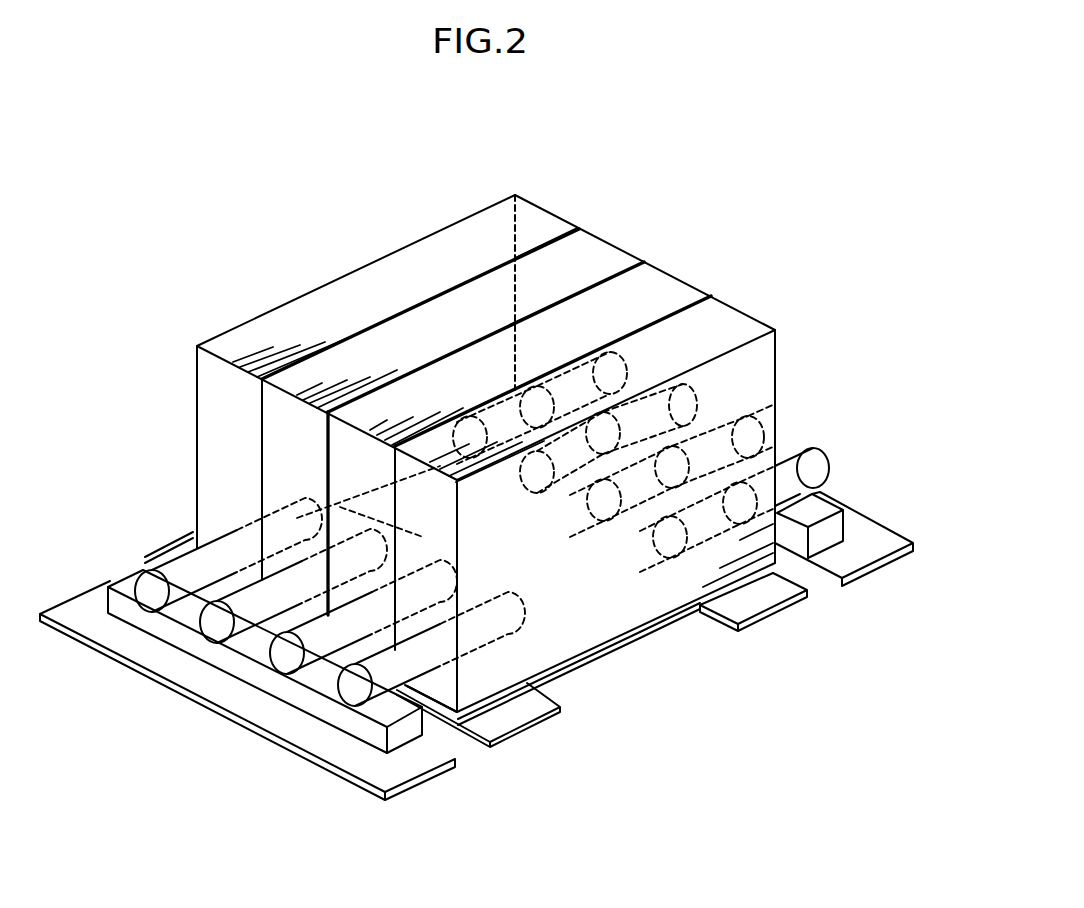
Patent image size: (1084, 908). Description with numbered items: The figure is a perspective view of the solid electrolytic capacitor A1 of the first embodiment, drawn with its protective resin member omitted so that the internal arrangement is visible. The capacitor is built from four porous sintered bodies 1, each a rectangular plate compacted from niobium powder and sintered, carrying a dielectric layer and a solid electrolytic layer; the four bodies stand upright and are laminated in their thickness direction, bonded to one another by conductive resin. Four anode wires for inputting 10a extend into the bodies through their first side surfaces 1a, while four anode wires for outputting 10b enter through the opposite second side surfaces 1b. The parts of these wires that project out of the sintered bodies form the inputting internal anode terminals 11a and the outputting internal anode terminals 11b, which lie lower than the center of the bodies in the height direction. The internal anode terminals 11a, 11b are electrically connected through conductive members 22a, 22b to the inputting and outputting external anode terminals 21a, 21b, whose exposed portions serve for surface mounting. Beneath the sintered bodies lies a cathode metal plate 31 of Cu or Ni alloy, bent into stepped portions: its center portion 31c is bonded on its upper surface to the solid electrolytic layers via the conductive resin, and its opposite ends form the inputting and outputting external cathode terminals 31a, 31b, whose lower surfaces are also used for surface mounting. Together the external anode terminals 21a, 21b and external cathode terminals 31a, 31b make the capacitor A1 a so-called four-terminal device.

The solid electrolytic capacitor A1 is at (303, 226).
The porous sintered body 1 is at (546, 210).
The first side surface 1a is at (427, 508).
The second side surface 1b is at (778, 348).
The anode wire for inputting 10a is at (368, 555).
The anode wire for outputting 10b is at (490, 467).
The inputting internal anode terminal 11a is at (361, 679).
The outputting internal anode terminal 11b is at (625, 365).
The inputting external anode terminal 21a is at (378, 770).
The outputting external anode terminal 21b is at (863, 548).
The conductive member 22a is at (358, 722).
The conductive member 22b is at (835, 527).
The cathode metal plate 31 is at (665, 620).
The inputting external cathode terminal 31a is at (762, 597).
The outputting external cathode terminal 31b is at (512, 720).
The center portion 31c is at (597, 652).